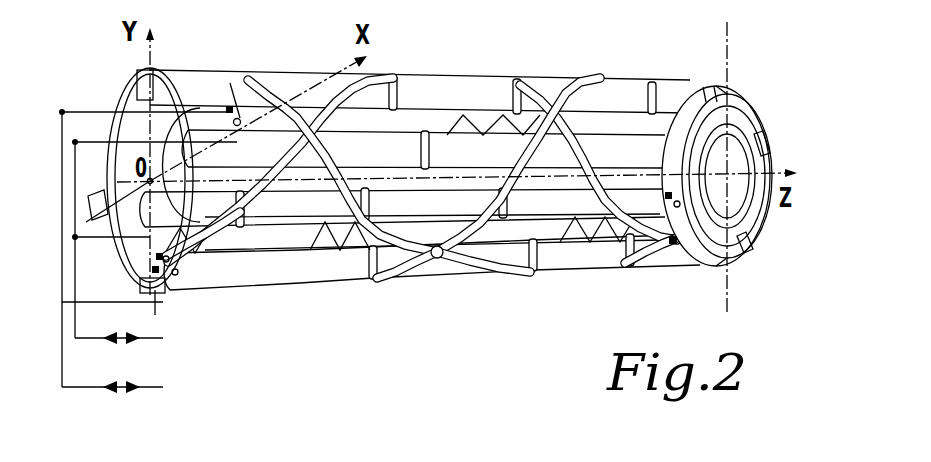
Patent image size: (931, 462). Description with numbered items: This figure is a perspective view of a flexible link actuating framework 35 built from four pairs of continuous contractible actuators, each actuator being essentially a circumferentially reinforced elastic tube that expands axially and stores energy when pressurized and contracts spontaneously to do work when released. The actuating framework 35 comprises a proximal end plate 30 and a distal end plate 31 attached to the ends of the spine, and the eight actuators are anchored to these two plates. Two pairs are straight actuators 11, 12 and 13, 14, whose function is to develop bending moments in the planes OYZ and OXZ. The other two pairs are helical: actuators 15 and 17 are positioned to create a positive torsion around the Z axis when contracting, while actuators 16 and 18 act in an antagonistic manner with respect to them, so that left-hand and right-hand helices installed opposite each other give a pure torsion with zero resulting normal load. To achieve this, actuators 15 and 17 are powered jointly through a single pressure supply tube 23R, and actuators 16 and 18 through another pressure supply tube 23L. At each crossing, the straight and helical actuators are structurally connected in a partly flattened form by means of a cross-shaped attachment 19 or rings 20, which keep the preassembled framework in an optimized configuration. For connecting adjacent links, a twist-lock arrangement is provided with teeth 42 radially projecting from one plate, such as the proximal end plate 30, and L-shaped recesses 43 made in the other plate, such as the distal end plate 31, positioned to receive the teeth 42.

The straight actuator 11 is at (200, 78).
The straight actuator 12 is at (345, 277).
The straight actuator 13 is at (402, 142).
The straight actuator 14 is at (302, 218).
The helical actuator 15 is at (372, 80).
The helical actuator 16 is at (538, 93).
The helical actuator 17 is at (406, 268).
The helical actuator 18 is at (480, 262).
The cross-shaped attachment 19 is at (444, 254).
The ring 20 is at (267, 257).
The pressure supply tube 23R is at (163, 338).
The pressure supply tube 23L is at (163, 387).
The proximal end plate 30 is at (138, 103).
The distal end plate 31 is at (732, 88).
The actuating framework 35 is at (603, 80).
The tooth 42 is at (96, 190).
The L-shaped recess 43 is at (743, 252).